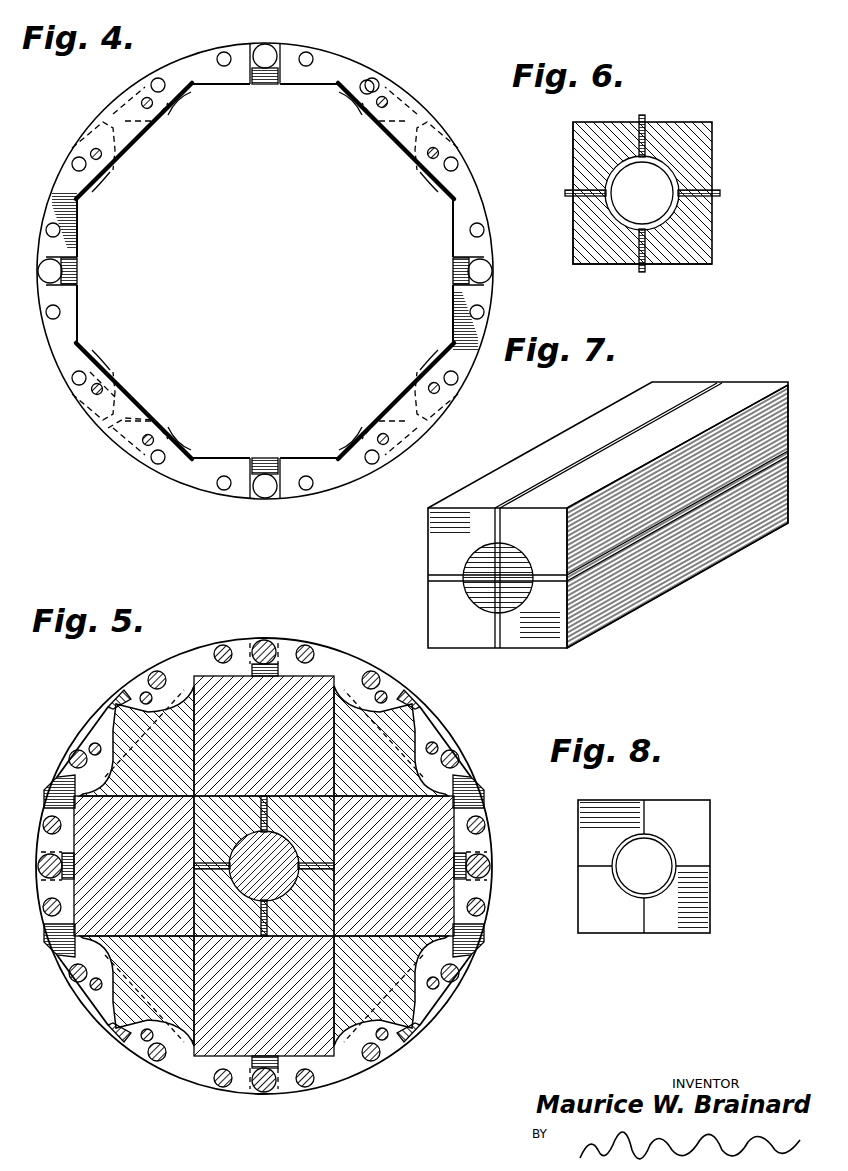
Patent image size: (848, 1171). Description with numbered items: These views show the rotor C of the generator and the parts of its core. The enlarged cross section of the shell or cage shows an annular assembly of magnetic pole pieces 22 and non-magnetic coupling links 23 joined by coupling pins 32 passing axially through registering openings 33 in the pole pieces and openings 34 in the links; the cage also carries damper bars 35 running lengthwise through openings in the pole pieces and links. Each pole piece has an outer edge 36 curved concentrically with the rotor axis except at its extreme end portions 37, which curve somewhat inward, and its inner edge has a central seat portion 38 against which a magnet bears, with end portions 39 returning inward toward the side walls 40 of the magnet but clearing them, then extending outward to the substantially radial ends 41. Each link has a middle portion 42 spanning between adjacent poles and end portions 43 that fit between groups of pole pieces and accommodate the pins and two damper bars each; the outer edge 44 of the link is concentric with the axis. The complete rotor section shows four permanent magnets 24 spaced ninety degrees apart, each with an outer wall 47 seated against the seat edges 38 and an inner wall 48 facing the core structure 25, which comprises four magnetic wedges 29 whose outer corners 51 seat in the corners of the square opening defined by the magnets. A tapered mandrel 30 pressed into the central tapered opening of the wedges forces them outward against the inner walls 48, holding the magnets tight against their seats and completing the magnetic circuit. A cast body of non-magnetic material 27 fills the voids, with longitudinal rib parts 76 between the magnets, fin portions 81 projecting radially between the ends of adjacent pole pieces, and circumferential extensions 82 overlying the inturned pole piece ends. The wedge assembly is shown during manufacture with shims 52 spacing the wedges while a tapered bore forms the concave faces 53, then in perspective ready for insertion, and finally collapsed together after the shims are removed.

In FIG. 4, the magnetic pole pieces 22 is at (276, 46).
In FIG. 5, the magnetic pole pieces 22 is at (238, 650).
In FIG. 4, the non-magnetic coupling links 23 is at (112, 116).
In FIG. 5, the non-magnetic coupling links 23 is at (264, 866).
In FIG. 5, the permanent magnets 24 is at (306, 700).
In FIG. 5, the core structure 25 is at (314, 823).
In FIG. 6, the core structure 25 is at (670, 118).
In FIG. 7, the core structure 25 is at (692, 380).
In FIG. 8, the core structure 25 is at (674, 798).
In FIG. 5, the body of non-magnetic material 27 is at (372, 760).
In FIG. 6, the wedges 29 is at (590, 138).
In FIG. 7, the wedges 29 is at (528, 463).
In FIG. 8, the wedges 29 is at (594, 818).
In FIG. 5, the tapered mandrel 30 is at (385, 879).
In FIG. 4, the coupling pins 32 is at (380, 108).
In FIG. 5, the coupling pins 32 is at (382, 697).
In FIG. 5, the openings in pole pieces 33 is at (432, 750).
In FIG. 4, the openings in links 34 is at (432, 162).
In FIG. 5, the damper bars 35 is at (264, 640).
In FIG. 8, the damper bars 35 is at (620, 866).
In FIG. 5, the outer edge of pole piece 36 is at (236, 1096).
In FIG. 5, the end portions of outer edge 37 is at (122, 1040).
In FIG. 4, the seat portion 38 is at (268, 86).
In FIG. 5, the seat portion 38 is at (214, 1060).
In FIG. 4, the end portions of inner edge 39 is at (118, 396).
In FIG. 5, the end portions of inner edge 39 is at (102, 1024).
In FIG. 5, the side walls of magnet 40 is at (184, 690).
In FIG. 4, the ends of pole piece 41 is at (110, 430).
In FIG. 5, the ends of pole piece 41 is at (400, 1022).
In FIG. 4, the middle portion of coupler link 42 is at (136, 140).
In FIG. 4, the end portions of coupler link 43 is at (74, 240).
In FIG. 4, the outer edge of coupler link 44 is at (88, 126).
In FIG. 5, the outer wall of magnet 47 is at (296, 648).
In FIG. 5, the inner wall of magnet 48 is at (95, 784).
In FIG. 6, the outer corner of wedge 51 is at (714, 120).
In FIG. 7, the outer corner of wedge 51 is at (665, 458).
In FIG. 8, the outer corner of wedge 51 is at (712, 800).
In FIG. 6, the shims 52 is at (700, 188).
In FIG. 6, the concave faces 53 is at (666, 210).
In FIG. 7, the concave faces 53 is at (490, 600).
In FIG. 8, the concave faces 53 is at (670, 854).
In FIG. 5, the longitudinal rib parts 76 is at (430, 944).
In FIG. 5, the fin portions 81 is at (108, 710).
In FIG. 5, the circumferential extensions 82 is at (120, 686).
In FIG. 4, the rotor C is at (382, 70).
In FIG. 5, the rotor C is at (216, 642).